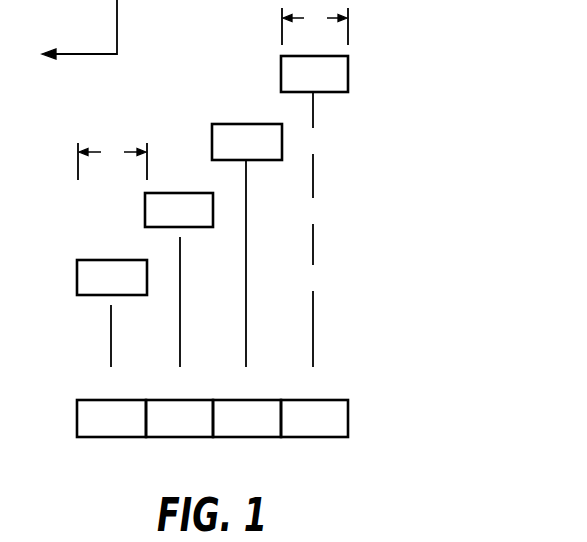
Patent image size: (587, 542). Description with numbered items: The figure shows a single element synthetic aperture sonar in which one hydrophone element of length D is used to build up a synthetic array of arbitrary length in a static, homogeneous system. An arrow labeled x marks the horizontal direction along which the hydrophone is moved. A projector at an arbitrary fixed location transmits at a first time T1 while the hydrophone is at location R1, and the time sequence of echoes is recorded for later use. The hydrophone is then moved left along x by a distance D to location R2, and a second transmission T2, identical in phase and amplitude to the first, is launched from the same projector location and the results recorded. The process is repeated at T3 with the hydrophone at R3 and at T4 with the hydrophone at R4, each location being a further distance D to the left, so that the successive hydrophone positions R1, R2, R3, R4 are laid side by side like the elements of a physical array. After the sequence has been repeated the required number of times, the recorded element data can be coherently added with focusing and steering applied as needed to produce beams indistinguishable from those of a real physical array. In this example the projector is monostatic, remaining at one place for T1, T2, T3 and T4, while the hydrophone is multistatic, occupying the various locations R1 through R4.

The x axis x is at (79, 44).
The element length D is at (213, 93).
The first transmission T1 is at (340, 92).
The second transmission T2 is at (350, 164).
The third transmission T3 is at (350, 232).
The fourth transmission T4 is at (350, 317).
The first hydrophone location R1 is at (314, 404).
The second hydrophone location R2 is at (247, 280).
The third hydrophone location R3 is at (179, 315).
The fourth hydrophone location R4 is at (112, 348).